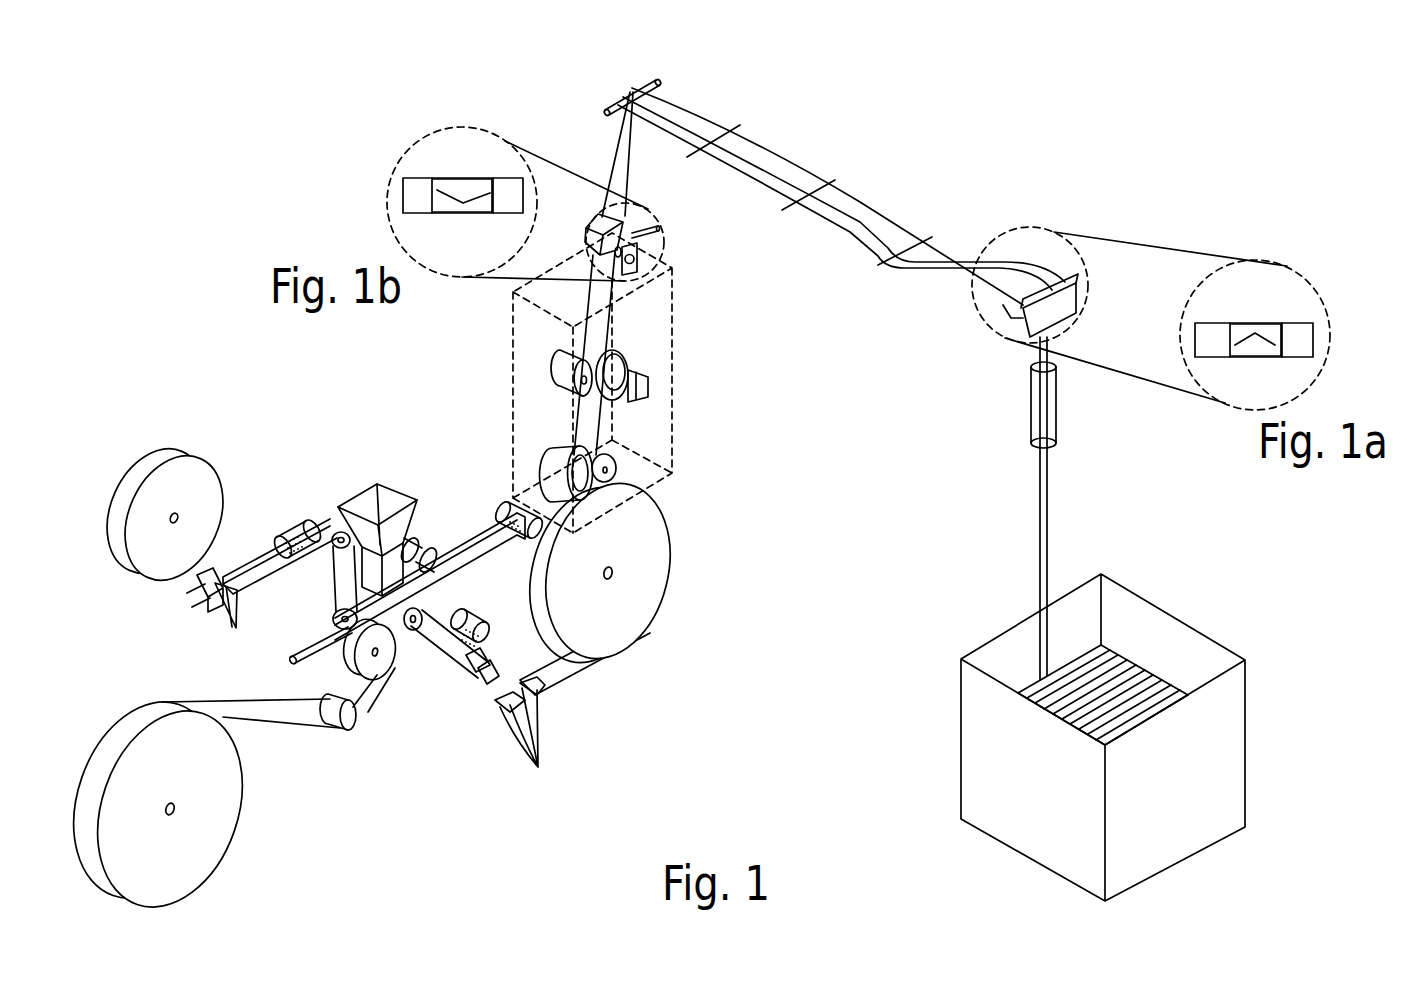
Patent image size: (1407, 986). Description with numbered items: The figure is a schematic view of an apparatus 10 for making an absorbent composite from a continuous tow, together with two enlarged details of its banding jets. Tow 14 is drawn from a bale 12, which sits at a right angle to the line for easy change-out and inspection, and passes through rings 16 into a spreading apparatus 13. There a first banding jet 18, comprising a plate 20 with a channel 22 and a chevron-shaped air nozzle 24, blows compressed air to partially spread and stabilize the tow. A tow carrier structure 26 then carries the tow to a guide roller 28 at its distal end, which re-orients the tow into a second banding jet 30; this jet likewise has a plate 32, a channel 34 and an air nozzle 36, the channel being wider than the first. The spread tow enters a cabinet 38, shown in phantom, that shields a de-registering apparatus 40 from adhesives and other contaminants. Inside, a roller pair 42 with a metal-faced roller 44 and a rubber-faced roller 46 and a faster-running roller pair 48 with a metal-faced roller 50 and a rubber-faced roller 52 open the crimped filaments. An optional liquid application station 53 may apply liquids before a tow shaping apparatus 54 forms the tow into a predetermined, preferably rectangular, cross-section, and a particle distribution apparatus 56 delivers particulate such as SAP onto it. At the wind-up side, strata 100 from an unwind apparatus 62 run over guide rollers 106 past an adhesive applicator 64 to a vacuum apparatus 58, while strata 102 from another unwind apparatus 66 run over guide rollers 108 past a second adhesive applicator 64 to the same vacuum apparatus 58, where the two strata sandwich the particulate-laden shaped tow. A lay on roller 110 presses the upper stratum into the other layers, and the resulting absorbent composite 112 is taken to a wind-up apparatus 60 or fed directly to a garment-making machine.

In FIG. 1, the apparatus 10 is at (1030, 130).
In FIG. 1, the bale 12 is at (1177, 813).
In FIG. 1, the spreading apparatus 13 is at (768, 112).
In FIG. 1, the tow 14 is at (1046, 543).
In FIG. 1, the rings 16 is at (1031, 370).
In FIG. 1, the first banding jet 18 is at (1062, 305).
In FIG. 1A, the plate 20 is at (1305, 333).
In FIG. 1A, the channel 22 is at (1255, 352).
In FIG. 1A, the air nozzle 24 is at (1263, 335).
In FIG. 1, the tow carrier structure 26 is at (857, 212).
In FIG. 1, the guide roller 28 is at (612, 108).
In FIG. 1, the second banding jet 30 is at (595, 217).
In FIG. 1B, the plate 32 is at (418, 198).
In FIG. 1B, the channel 34 is at (480, 208).
In FIG. 1B, the air nozzle 36 is at (450, 197).
In FIG. 1, the cabinet 38 is at (677, 343).
In FIG. 1, the de-registering apparatus 40 is at (645, 422).
In FIG. 1, the roller pair 42 is at (630, 330).
In FIG. 1, the metal-faced roller 44 is at (562, 369).
In FIG. 1, the rubber-faced roller 46 is at (630, 355).
In FIG. 1, the roller pair 48 is at (552, 432).
In FIG. 1, the metal-faced roller 50 is at (627, 470).
In FIG. 1, the rubber-faced roller 52 is at (548, 468).
In FIG. 1, the liquid application station 53 is at (498, 510).
In FIG. 1, the tow shaping apparatus 54 is at (485, 555).
In FIG. 1, the particle distribution apparatus 56 is at (355, 465).
In FIG. 1, the vacuum apparatus 58 is at (380, 660).
In FIG. 1, the wind-up apparatus 60 is at (253, 833).
In FIG. 1, the unwind apparatus 62 is at (640, 653).
In FIG. 1, the adhesive applicator 64 is at (297, 558).
In FIG. 1, the unwind apparatus 66 is at (135, 447).
In FIG. 1, the strata 100 is at (560, 670).
In FIG. 1, the strata 102 is at (258, 565).
In FIG. 1, the guide rollers 106 is at (417, 628).
In FIG. 1, the guide rollers 108 is at (325, 518).
In FIG. 1, the lay on roller 110 is at (320, 673).
In FIG. 1, the absorbent composite 112 is at (298, 728).